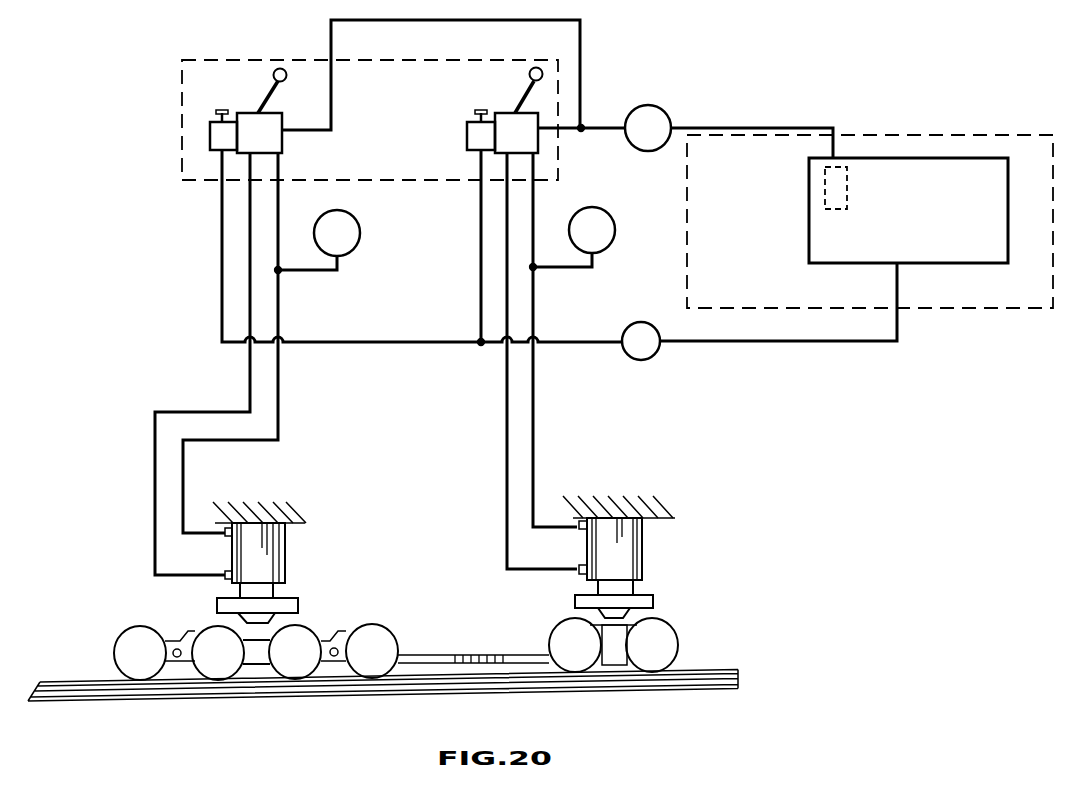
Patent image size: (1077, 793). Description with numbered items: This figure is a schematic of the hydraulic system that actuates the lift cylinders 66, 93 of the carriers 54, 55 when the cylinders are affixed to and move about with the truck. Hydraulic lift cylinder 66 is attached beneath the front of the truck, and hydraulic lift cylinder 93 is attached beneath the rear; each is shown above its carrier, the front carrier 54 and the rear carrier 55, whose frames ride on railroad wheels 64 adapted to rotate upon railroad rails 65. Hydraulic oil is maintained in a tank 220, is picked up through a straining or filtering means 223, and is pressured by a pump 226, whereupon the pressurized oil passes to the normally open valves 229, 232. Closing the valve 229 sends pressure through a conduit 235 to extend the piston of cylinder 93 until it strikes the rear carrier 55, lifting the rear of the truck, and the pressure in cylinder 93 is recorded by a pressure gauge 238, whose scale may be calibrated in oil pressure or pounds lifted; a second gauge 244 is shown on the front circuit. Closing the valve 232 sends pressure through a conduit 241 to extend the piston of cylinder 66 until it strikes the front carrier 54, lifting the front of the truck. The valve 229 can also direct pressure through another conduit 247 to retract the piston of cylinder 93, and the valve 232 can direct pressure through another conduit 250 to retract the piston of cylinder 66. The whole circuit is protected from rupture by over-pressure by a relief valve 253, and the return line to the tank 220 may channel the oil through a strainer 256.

The valve 232 is at (252, 112).
The valve 229 is at (499, 113).
The relief valve 253 is at (210, 135).
The pump 226 is at (664, 111).
The tank 220 is at (905, 173).
The straining or filtering means 223 is at (846, 175).
The pressure gauge 238 is at (617, 230).
The pressure gauge 244 is at (360, 233).
The conduit 241 is at (280, 306).
The conduit 250 is at (249, 392).
The conduit 247 is at (505, 392).
The conduit 235 is at (535, 403).
The strainer 256 is at (638, 358).
The hydraulic lift cylinder 66 is at (288, 572).
The hydraulic lift cylinder 93 is at (645, 568).
The front carrier 54 is at (172, 642).
The railroad wheels 64 is at (682, 645).
The railroad rails 65 is at (705, 672).
The rear carrier 55 is at (615, 660).